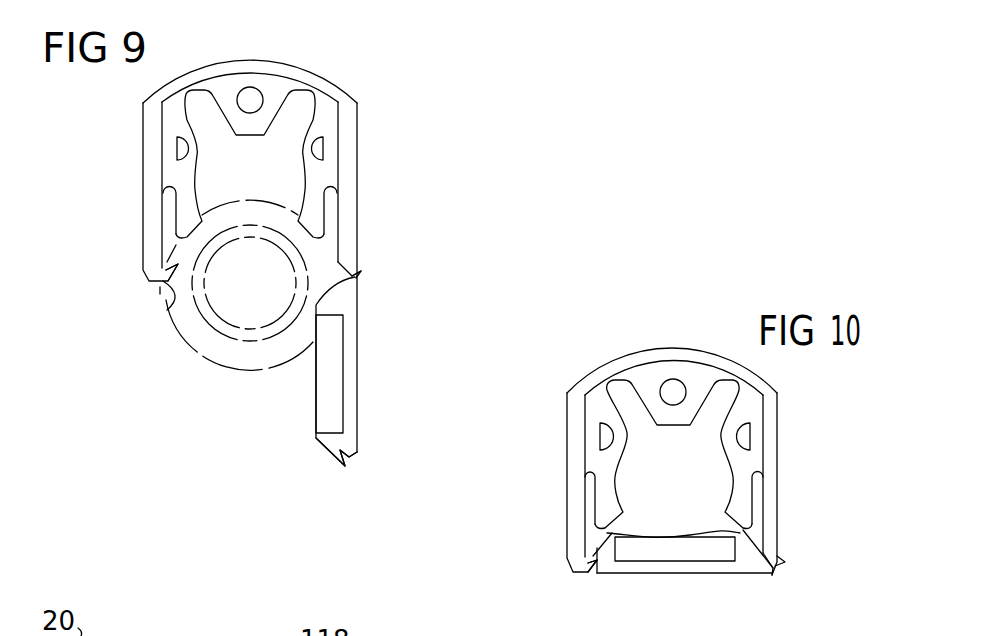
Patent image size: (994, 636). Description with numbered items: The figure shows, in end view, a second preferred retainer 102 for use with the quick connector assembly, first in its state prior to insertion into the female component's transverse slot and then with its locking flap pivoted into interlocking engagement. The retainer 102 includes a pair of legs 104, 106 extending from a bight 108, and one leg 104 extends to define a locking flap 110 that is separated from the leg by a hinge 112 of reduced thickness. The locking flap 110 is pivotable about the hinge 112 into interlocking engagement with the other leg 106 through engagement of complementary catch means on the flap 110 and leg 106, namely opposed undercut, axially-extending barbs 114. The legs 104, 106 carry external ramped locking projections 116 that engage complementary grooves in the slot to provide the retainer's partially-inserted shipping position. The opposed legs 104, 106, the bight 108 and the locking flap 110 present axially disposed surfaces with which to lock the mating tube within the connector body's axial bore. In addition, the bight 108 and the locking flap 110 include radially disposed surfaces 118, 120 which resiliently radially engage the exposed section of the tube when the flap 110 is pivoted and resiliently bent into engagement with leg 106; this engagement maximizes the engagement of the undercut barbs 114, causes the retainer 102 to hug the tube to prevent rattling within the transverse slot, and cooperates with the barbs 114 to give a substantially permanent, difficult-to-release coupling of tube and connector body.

In FIG. 9, the second preferred retainer 102 is at (353, 78).
In FIG. 10, the second preferred retainer 102 is at (793, 415).
In FIG. 9, the leg 104 is at (357, 202).
In FIG. 10, the leg 104 is at (778, 466).
In FIG. 9, the leg 106 is at (142, 182).
In FIG. 10, the leg 106 is at (566, 478).
In FIG. 9, the bight 108 is at (273, 62).
In FIG. 10, the bight 108 is at (592, 385).
In FIG. 9, the locking flap 110 is at (358, 388).
In FIG. 10, the locking flap 110 is at (658, 577).
In FIG. 9, the hinge 112 is at (358, 275).
In FIG. 10, the hinge 112 is at (773, 570).
In FIG. 9, the undercut, axially-extending barbs 114 is at (165, 305).
In FIG. 9, the external ramped locking projections 116 is at (140, 272).
In FIG. 10, the external ramped locking projections 116 is at (562, 562).
In FIG. 9, the radially disposed surface 118 is at (249, 137).
In FIG. 9, the radially disposed surface 120 is at (313, 373).